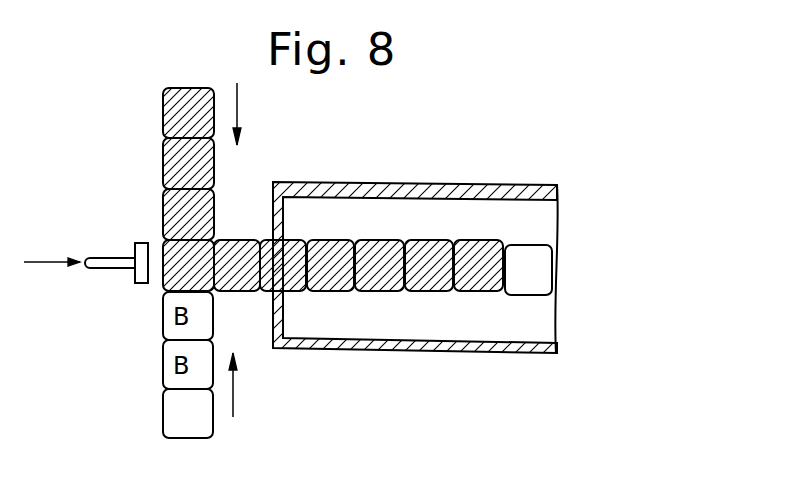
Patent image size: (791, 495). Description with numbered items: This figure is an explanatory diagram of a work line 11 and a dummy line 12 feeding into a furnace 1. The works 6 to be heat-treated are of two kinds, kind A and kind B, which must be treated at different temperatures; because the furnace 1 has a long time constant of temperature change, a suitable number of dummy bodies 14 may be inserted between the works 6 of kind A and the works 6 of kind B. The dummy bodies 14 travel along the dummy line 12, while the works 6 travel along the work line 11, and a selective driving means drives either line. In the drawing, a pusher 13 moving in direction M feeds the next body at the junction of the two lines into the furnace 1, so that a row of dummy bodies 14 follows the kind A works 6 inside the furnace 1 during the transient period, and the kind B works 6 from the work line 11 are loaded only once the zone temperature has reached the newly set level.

The furnace 1 is at (346, 351).
The works 6 is at (165, 405).
The work line 11 is at (250, 385).
The dummy line 12 is at (252, 114).
The pusher 13 is at (103, 269).
The dummy bodies 14 is at (178, 115).
The pusher motion direction M is at (52, 250).